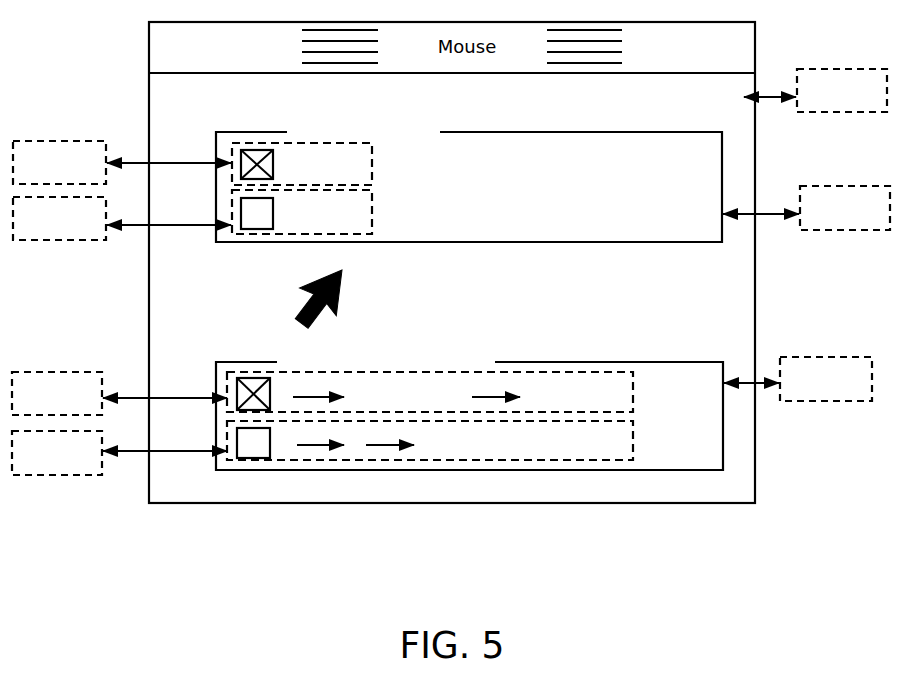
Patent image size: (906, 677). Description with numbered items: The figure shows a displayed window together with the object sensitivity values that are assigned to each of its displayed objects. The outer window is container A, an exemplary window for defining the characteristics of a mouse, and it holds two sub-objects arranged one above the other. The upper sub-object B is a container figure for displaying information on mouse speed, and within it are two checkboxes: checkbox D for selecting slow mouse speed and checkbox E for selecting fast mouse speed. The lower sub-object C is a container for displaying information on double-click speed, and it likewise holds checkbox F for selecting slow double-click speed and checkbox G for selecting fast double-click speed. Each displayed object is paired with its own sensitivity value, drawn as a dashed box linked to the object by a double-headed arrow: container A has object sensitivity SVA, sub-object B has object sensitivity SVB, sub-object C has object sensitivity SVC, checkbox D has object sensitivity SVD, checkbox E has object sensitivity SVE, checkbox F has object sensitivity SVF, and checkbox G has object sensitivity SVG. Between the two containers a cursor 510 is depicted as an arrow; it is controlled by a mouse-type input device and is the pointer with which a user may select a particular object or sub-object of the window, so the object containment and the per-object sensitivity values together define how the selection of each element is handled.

The cursor 510 is at (340, 297).
The container A is at (760, 98).
The sub-object B is at (440, 180).
The sub-object C is at (440, 410).
The checkbox D is at (231, 154).
The checkbox E is at (232, 211).
The checkbox F is at (229, 391).
The checkbox G is at (229, 446).
The object sensitivity SVA is at (842, 90).
The object sensitivity SVB is at (806, 208).
The object sensitivity SVC is at (798, 379).
The object sensitivity SVD is at (122, 162).
The object sensitivity SVE is at (122, 218).
The object sensitivity SVF is at (119, 393).
The object sensitivity SVG is at (119, 453).